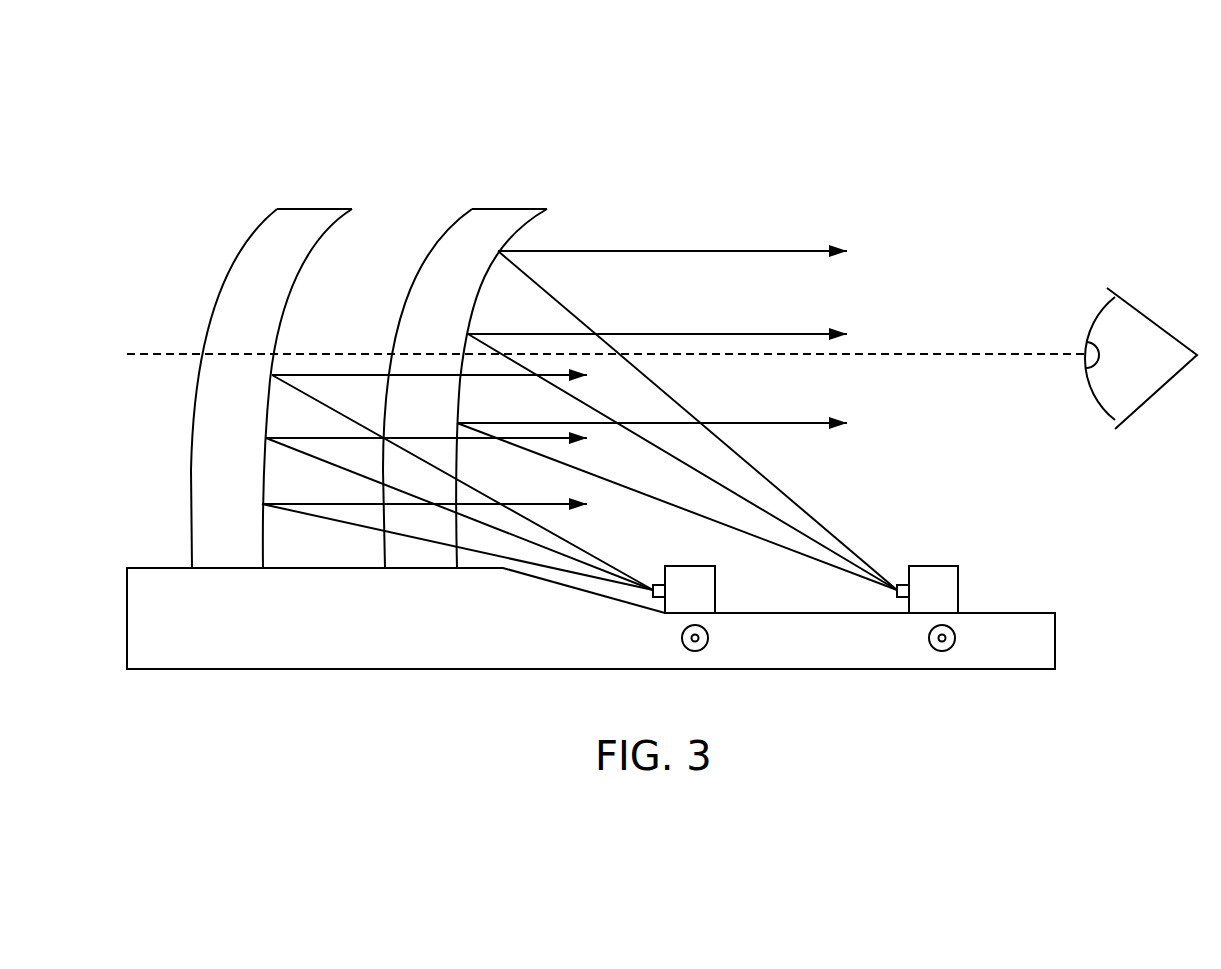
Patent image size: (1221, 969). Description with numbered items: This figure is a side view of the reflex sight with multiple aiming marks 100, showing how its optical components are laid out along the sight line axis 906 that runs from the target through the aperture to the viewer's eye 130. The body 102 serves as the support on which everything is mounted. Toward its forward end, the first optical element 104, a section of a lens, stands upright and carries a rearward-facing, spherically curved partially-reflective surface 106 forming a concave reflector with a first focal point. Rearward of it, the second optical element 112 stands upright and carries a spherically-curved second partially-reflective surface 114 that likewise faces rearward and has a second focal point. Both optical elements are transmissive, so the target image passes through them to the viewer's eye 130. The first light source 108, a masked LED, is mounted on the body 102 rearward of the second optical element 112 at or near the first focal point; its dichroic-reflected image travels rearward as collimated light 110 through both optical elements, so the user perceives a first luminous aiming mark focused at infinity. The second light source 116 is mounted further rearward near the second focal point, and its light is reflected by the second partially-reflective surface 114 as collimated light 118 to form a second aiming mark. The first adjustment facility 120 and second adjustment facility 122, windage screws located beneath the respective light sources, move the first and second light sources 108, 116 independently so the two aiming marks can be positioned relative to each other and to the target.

The reflex sight with multiple aiming marks 100 is at (852, 83).
The body 102 is at (500, 669).
The first optical element 104 is at (284, 358).
The partially-reflective surface 106 is at (300, 267).
The first light source 108 is at (696, 566).
The collimated light 110 is at (344, 374).
The second optical element 112 is at (471, 358).
The second partially-reflective surface 114 is at (476, 300).
The second light source 116 is at (939, 566).
The collimated light 118 is at (680, 334).
The first adjustment facility 120 is at (710, 637).
The second adjustment facility 122 is at (950, 647).
The viewer's eye 130 is at (1135, 306).
The sight line axis 906 is at (931, 355).